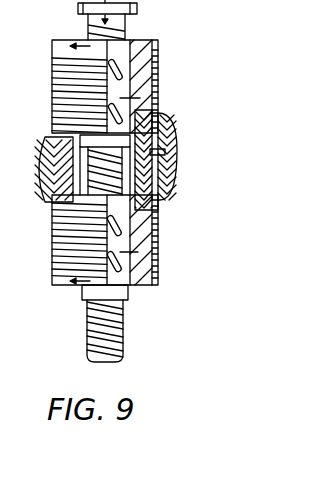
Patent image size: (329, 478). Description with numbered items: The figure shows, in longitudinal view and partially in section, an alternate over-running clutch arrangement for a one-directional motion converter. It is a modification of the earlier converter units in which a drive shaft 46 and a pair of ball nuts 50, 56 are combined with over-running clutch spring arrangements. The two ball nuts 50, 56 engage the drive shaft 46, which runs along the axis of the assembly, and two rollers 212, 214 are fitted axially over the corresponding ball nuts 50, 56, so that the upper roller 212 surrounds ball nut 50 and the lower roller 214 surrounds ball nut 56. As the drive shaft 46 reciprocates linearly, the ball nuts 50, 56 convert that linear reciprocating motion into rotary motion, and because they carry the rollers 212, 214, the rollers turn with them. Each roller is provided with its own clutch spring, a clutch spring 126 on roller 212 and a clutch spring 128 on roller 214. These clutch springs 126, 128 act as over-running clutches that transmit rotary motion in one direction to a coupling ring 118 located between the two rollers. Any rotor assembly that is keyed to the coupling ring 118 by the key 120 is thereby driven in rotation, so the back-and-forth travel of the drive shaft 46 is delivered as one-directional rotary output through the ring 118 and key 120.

The ball nut 50 is at (118, 58).
The roller 212 is at (140, 82).
The clutch spring 126 is at (160, 90).
The key 120 is at (150, 152).
The coupling ring 118 is at (140, 177).
The ball nut 56 is at (115, 277).
The roller 214 is at (140, 273).
The clutch spring 128 is at (160, 262).
The drive shaft 46 is at (100, 364).